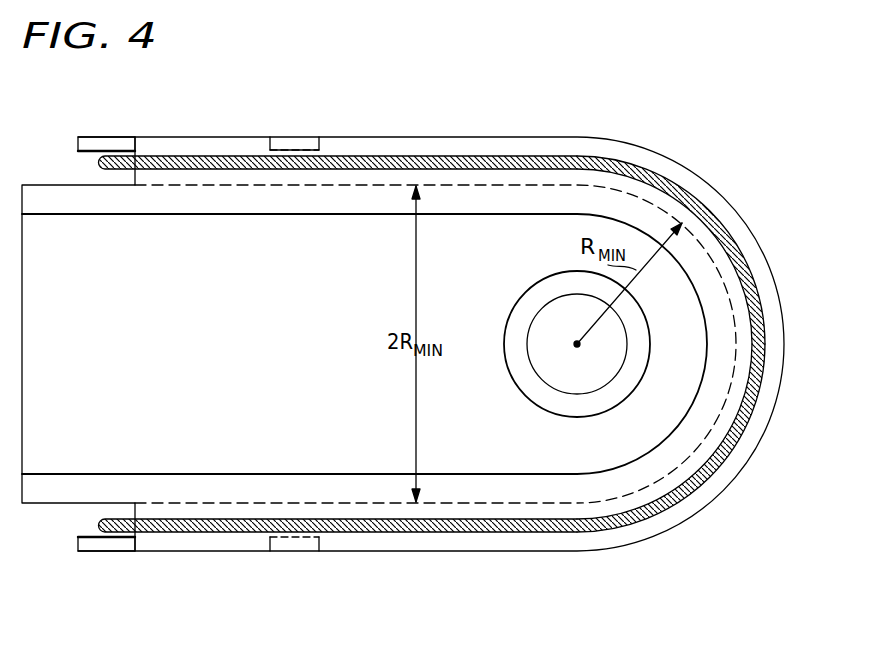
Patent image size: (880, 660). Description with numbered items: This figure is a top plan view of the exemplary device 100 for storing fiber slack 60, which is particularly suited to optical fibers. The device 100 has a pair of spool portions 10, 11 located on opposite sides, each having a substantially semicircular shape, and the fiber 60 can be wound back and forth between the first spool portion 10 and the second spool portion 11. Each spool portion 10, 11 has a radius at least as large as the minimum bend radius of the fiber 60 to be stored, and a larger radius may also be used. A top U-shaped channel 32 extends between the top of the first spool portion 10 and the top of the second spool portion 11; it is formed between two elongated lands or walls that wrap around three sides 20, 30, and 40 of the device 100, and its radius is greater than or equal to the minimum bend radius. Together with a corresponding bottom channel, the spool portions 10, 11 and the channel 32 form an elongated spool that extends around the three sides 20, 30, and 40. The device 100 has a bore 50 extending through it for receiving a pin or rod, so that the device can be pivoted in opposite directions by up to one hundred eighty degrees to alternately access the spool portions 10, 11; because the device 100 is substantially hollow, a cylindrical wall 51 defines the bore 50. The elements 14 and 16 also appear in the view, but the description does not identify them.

The device 100 is at (100, 85).
The first spool portion 10 is at (104, 513).
The second spool portion 11 is at (110, 181).
The connector pads 14 is at (78, 145).
The outer cover layer 16 is at (538, 540).
The side of the device 20 is at (378, 503).
The side of the device 30 is at (720, 425).
The top U-shaped channel 32 is at (650, 500).
The side of the device 40 is at (390, 185).
The bore 50 is at (552, 372).
The cylindrical wall 51 is at (520, 296).
The fiber slack 60 is at (678, 183).